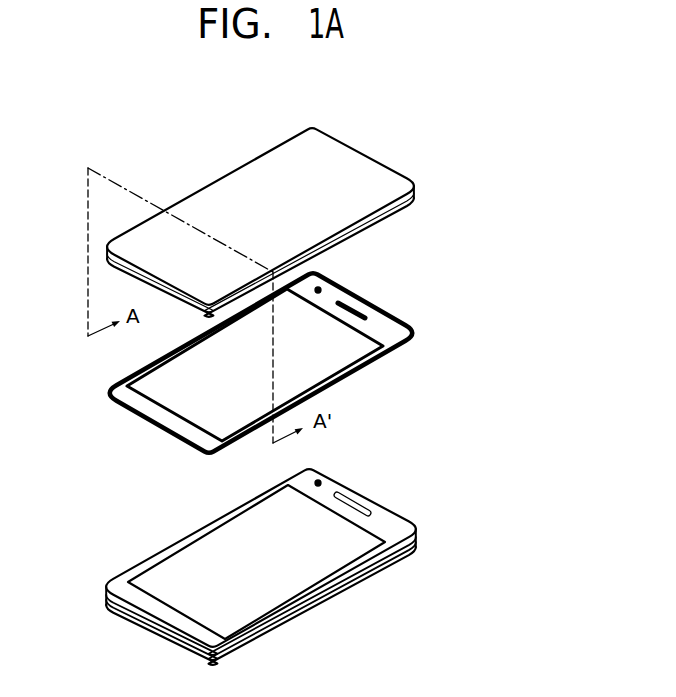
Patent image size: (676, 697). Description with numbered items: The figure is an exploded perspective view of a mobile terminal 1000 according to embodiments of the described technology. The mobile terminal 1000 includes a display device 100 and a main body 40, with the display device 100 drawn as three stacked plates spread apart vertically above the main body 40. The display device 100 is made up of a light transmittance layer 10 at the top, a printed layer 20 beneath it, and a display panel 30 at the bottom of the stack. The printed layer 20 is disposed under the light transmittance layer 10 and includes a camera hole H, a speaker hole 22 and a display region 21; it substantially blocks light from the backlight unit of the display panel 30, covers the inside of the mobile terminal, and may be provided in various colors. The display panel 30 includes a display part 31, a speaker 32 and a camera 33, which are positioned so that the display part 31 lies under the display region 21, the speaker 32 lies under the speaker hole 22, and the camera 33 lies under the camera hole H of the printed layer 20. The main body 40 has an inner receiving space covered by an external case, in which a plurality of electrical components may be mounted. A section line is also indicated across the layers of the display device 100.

The mobile terminal 1000 is at (177, 154).
The display device 100 is at (497, 151).
The light transmittance layer 10 is at (418, 175).
The printed layer 20 is at (295, 357).
The display region 21 is at (183, 398).
The speaker hole 22 is at (352, 310).
The camera hole H is at (322, 290).
The display panel 30 is at (299, 547).
The display part 31 is at (185, 563).
The speaker 32 is at (358, 504).
The camera 33 is at (321, 482).
The main body 40 is at (342, 602).